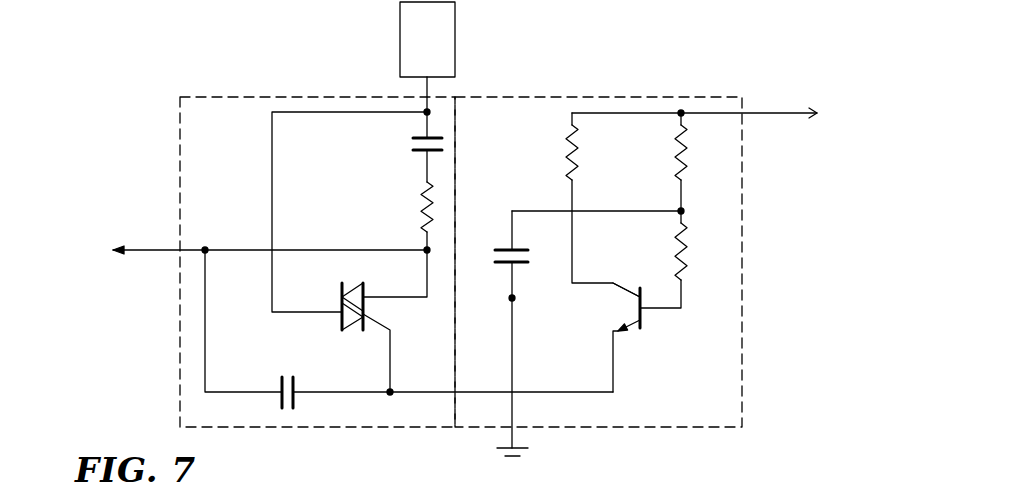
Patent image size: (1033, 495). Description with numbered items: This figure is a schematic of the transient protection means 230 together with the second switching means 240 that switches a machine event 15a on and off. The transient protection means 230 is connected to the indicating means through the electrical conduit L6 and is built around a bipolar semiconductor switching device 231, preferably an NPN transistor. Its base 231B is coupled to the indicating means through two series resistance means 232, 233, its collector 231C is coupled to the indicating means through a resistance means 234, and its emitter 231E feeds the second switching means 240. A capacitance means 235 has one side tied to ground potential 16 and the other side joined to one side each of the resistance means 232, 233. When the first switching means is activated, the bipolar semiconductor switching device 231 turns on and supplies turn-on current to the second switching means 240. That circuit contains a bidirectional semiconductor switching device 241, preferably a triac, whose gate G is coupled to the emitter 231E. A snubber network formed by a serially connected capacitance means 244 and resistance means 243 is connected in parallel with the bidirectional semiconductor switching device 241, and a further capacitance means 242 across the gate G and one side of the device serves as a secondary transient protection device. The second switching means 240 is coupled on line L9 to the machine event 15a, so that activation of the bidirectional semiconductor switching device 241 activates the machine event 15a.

The machine event 15a is at (416, 42).
The second switching means 240 is at (213, 97).
The transient protection means 230 is at (750, 303).
The capacitance means 244 is at (414, 145).
The resistance means 243 is at (420, 194).
The bidirectional semiconductor switching device 241 is at (342, 286).
The capacitance means 242 is at (281, 387).
The resistance means 234 is at (579, 148).
The resistance means 233 is at (687, 161).
The resistance means 232 is at (690, 258).
The capacitance means 235 is at (498, 248).
The bipolar semiconductor switching device 231 is at (628, 314).
The base 231B is at (655, 309).
The collector 231C is at (622, 288).
The emitter 231E is at (629, 322).
The ground potential 16 is at (520, 456).
The electrical conduit L6 is at (707, 113).
The line L9 is at (255, 250).
The gate G is at (376, 330).